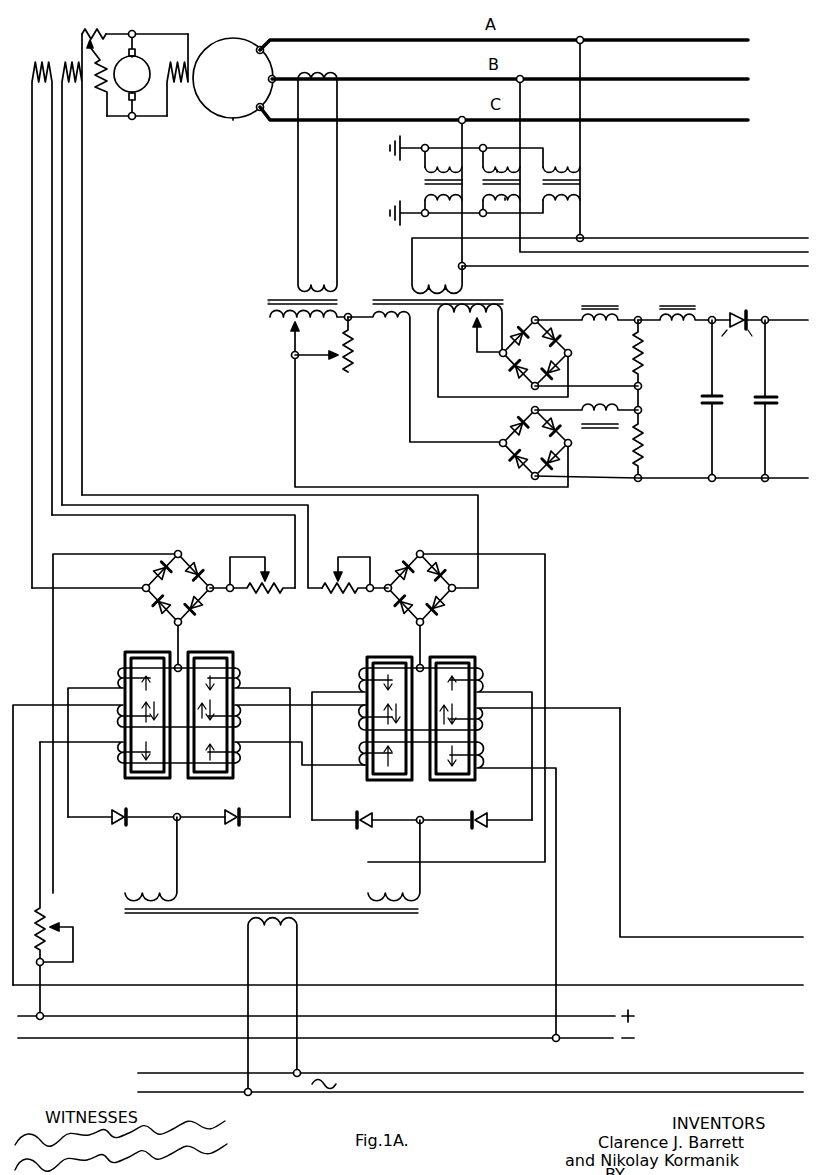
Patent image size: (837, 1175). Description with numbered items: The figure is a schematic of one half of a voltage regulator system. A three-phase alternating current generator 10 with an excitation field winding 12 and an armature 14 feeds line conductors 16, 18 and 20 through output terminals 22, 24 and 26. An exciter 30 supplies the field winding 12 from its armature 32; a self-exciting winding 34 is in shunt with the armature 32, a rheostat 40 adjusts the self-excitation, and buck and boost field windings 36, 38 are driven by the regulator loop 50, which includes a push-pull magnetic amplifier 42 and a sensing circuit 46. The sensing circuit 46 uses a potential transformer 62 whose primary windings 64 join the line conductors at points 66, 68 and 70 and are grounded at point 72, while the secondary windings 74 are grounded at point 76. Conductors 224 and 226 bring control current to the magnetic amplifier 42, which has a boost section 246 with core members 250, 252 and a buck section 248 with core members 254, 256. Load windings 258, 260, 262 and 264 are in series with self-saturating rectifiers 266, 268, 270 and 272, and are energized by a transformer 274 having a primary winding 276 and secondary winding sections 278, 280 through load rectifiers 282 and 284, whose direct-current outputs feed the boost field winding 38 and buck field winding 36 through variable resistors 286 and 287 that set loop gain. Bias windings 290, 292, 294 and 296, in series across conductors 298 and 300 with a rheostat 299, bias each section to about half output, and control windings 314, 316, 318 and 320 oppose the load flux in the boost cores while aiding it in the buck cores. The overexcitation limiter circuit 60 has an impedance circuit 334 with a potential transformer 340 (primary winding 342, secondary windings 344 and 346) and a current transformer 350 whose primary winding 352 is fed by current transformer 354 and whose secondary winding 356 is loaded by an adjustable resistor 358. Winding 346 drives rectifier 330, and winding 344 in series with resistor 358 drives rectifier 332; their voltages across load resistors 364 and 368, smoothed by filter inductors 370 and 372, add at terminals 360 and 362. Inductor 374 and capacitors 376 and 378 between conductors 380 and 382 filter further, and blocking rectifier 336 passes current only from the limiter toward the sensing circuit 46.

The three-phase alternating current generator 10 is at (242, 28).
The excitation field winding 12 is at (182, 88).
The armature 14 is at (240, 116).
The line conductor 16 is at (730, 42).
The line conductor 18 is at (732, 84).
The line conductor 20 is at (735, 125).
The output terminal 22 is at (261, 45).
The output terminal 24 is at (275, 78).
The output terminal 26 is at (261, 112).
The exciter 30 is at (146, 25).
The armature 32 is at (140, 66).
The self-exciting winding 34 is at (100, 90).
The buck field winding 36 is at (78, 52).
The boost field winding 38 is at (40, 62).
The rheostat 40 is at (82, 32).
The push-pull magnetic amplifier 42 is at (309, 653).
The sensing circuit 46 is at (676, 175).
The regulator loop 50 is at (664, 677).
The overexcitation limiter circuit 60 is at (614, 501).
The potential transformer 62 is at (616, 171).
The primary windings 64 is at (565, 168).
The connection point 66 is at (583, 44).
The connection point 68 is at (522, 83).
The connection point 70 is at (460, 123).
The ground point 72 is at (396, 152).
The secondary windings 74 is at (565, 198).
The ground point 76 is at (396, 217).
The conductor 224 is at (736, 985).
The conductor 226 is at (726, 937).
The boost section 246 is at (197, 801).
The buck section 248 is at (437, 801).
The magnetic core member 250 is at (150, 647).
The magnetic core member 252 is at (215, 647).
The magnetic core member 254 is at (396, 657).
The magnetic core member 256 is at (458, 657).
The load winding 258 is at (118, 674).
The load winding 260 is at (240, 675).
The load winding 262 is at (360, 679).
The load winding 264 is at (482, 678).
The self-saturating rectifier 266 is at (122, 825).
The self-saturating rectifier 268 is at (237, 825).
The self-saturating rectifier 270 is at (362, 829).
The self-saturating rectifier 272 is at (480, 829).
The transformer 274 is at (280, 908).
The primary winding 276 is at (276, 930).
The secondary winding section 278 is at (150, 892).
The secondary winding section 280 is at (392, 892).
The load rectifier 282 is at (194, 597).
The load rectifier 284 is at (436, 597).
The variable resistor 286 is at (266, 598).
The variable resistor 287 is at (344, 592).
The bias winding 290 is at (120, 767).
The bias winding 292 is at (239, 768).
The bias winding 294 is at (362, 758).
The bias winding 296 is at (482, 758).
The conductor 298 is at (488, 1016).
The rheostat 299 is at (46, 920).
The conductor 300 is at (492, 1038).
The control winding 314 is at (118, 720).
The control winding 316 is at (240, 726).
The control winding 318 is at (362, 724).
The control winding 320 is at (484, 727).
The full-wave dry-type rectifier 330 is at (550, 361).
The full-wave dry-type rectifier 332 is at (550, 451).
The impedance circuit 334 is at (258, 319).
The blocking rectifier 336 is at (750, 304).
The potential transformer 340 is at (390, 299).
The primary winding 342 is at (432, 290).
The secondary winding 344 is at (389, 320).
The secondary winding 346 is at (466, 320).
The current transformer 350 is at (270, 299).
The primary winding 352 is at (317, 289).
The current transformer 354 is at (320, 72).
The secondary winding 356 is at (285, 320).
The adjustable resistor 358 is at (358, 366).
The terminal 360 is at (638, 316).
The terminal 362 is at (640, 483).
The load resistor 364 is at (645, 352).
The load resistor 368 is at (645, 441).
The filter inductor 370 is at (600, 299).
The filter inductor 372 is at (604, 432).
The filter inductor 374 is at (683, 307).
The capacitor 376 is at (731, 397).
The capacitor 378 is at (758, 406).
The conductor 380 is at (786, 311).
The conductor 382 is at (767, 483).